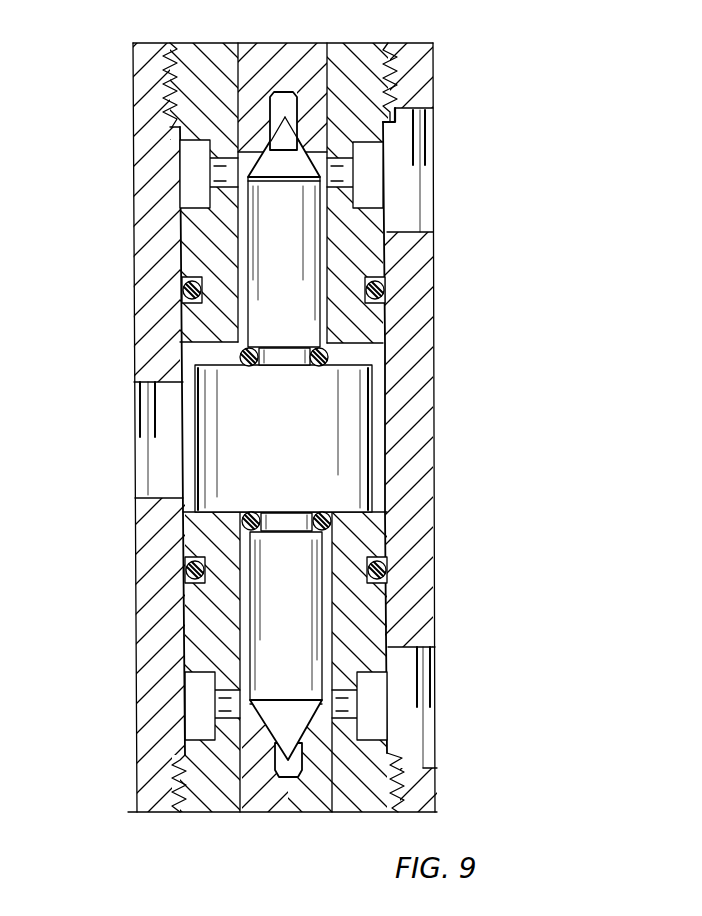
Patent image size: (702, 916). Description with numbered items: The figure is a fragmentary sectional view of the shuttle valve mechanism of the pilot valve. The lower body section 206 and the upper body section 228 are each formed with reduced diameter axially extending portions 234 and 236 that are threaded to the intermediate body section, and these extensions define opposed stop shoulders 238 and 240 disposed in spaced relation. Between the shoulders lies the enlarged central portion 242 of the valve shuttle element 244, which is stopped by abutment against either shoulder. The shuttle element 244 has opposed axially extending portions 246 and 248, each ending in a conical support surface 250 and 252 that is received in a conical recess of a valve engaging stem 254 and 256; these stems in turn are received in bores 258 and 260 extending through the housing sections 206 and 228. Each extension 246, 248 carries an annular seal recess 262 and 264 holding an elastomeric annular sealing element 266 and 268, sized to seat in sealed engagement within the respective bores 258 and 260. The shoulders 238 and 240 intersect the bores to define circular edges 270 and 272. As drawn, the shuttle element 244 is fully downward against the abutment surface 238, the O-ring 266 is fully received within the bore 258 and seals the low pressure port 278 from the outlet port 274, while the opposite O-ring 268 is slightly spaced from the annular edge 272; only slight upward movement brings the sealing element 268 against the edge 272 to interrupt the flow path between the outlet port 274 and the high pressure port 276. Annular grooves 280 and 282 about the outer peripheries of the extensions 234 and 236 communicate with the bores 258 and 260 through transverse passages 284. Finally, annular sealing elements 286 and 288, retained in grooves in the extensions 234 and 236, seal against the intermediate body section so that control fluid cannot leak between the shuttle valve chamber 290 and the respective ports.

The body section 206 is at (202, 792).
The body section 228 is at (200, 78).
The reduced diameter axially extending portion 234 is at (405, 800).
The reduced diameter axially extending portion 236 is at (393, 67).
The stop shoulder 238 is at (383, 505).
The stop shoulder 240 is at (387, 347).
The enlarged central portion 242 is at (212, 428).
The valve shuttle element 244 is at (193, 378).
The axially extending portion 246 is at (270, 607).
The axially extending portion 248 is at (268, 232).
The conical support surface 250 is at (285, 727).
The conical support surface 252 is at (180, 130).
The valve engaging stem 254 is at (263, 792).
The valve engaging stem 256 is at (165, 55).
The bore 258 is at (323, 792).
The bore 260 is at (318, 56).
The annular seal recess 262 is at (293, 519).
The annular seal recess 264 is at (293, 362).
The annular sealing element 266 is at (333, 520).
The annular sealing element 268 is at (333, 352).
The circular edge 270 is at (242, 513).
The circular edge 272 is at (243, 352).
The outlet port 274 is at (158, 468).
The high pressure port 276 is at (413, 178).
The low pressure port 278 is at (417, 733).
The annular groove 280 is at (205, 695).
The annular groove 282 is at (203, 170).
The transverse passages 284 is at (365, 712).
The annular sealing element 286 is at (187, 568).
The annular sealing element 288 is at (190, 290).
The shuttle valve chamber 290 is at (378, 432).